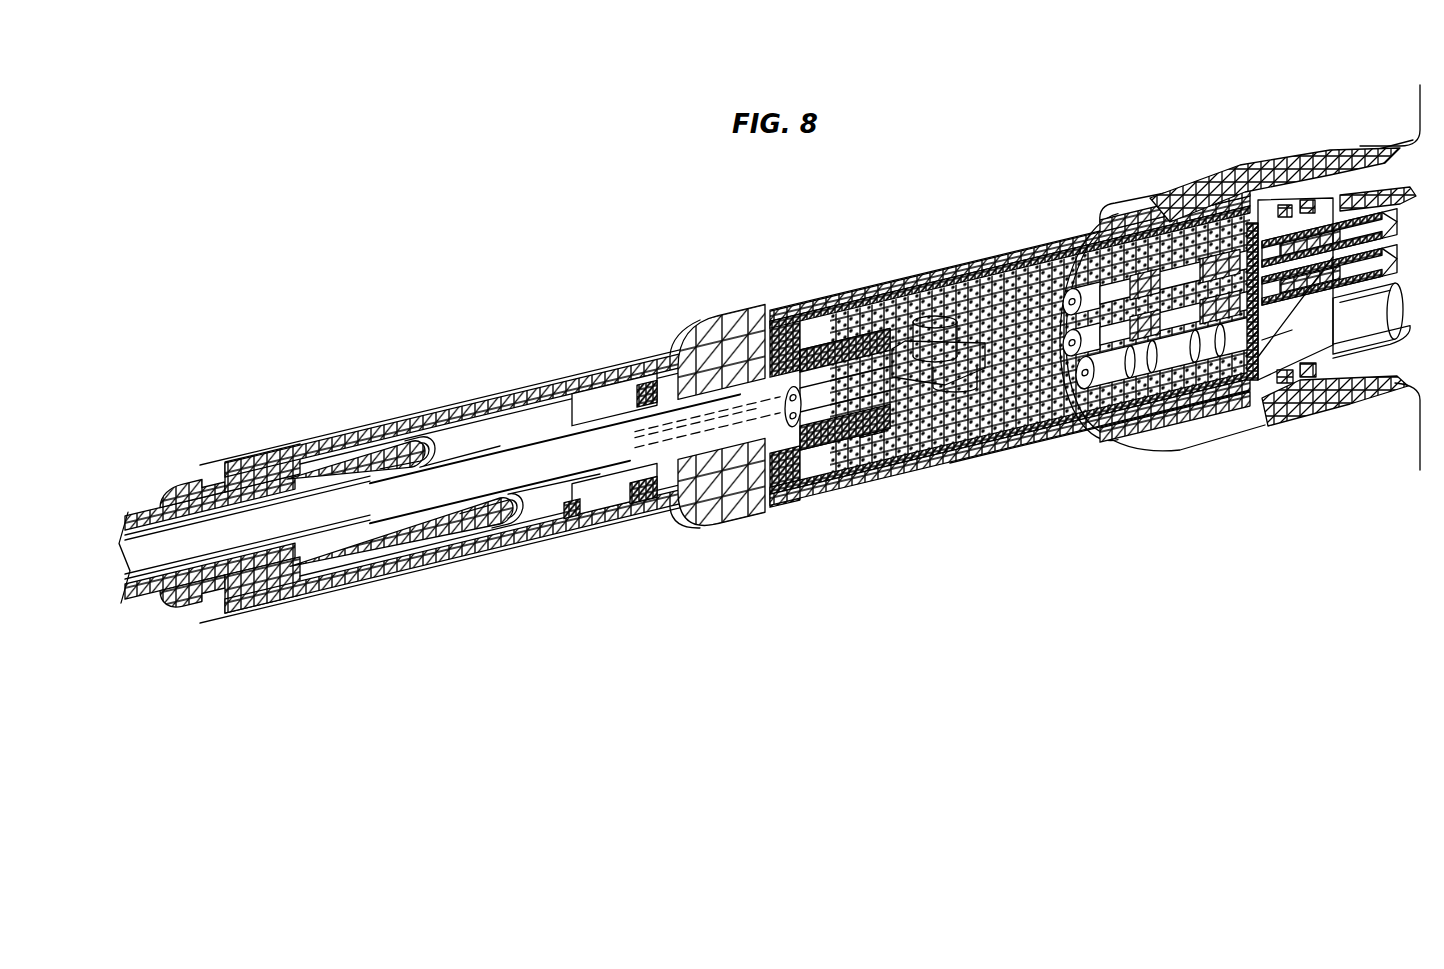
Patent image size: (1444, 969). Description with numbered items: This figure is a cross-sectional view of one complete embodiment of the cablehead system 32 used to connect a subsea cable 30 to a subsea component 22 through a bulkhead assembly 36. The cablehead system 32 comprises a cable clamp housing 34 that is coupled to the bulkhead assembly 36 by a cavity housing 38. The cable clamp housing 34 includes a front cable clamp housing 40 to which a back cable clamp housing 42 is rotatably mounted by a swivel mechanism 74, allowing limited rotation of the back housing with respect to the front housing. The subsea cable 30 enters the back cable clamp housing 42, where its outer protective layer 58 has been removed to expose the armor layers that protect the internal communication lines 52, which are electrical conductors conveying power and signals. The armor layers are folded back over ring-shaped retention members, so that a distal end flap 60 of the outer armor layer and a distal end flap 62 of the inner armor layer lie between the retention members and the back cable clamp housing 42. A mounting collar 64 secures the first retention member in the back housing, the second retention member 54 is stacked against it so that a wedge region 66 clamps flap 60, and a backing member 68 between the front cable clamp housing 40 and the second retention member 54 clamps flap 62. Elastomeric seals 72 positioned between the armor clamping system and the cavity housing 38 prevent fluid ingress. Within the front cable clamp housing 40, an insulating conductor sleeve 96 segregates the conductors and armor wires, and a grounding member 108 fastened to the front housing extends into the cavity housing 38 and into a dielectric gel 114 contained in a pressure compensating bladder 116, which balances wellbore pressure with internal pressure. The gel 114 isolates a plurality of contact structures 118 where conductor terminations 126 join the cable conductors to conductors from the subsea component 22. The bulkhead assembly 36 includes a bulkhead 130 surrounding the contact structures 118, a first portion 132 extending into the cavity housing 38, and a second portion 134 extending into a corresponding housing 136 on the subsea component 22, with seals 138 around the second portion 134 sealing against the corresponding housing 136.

The subsea component 22 is at (1390, 257).
The subsea cable 30 is at (150, 497).
The cablehead system 32 is at (744, 258).
The cable clamp housing 34 is at (598, 362).
The bulkhead assembly 36 is at (1258, 415).
The cavity housing 38 is at (888, 268).
The front cable clamp housing 40 is at (737, 478).
The back cable clamp housing 42 is at (530, 428).
The internal communication lines 52 is at (371, 567).
The second retention member 54 is at (490, 515).
The outer protective layer 58 is at (168, 592).
The distal end flap 60 is at (385, 445).
The distal end flap 62 is at (455, 440).
The mounting collar 64 is at (250, 586).
The wedge region 66 is at (440, 528).
The backing member 68 is at (572, 512).
The elastomeric seals 72 is at (583, 515).
The swivel mechanism 74 is at (668, 370).
The conductor sleeve 96 is at (822, 442).
The grounding member 108 is at (972, 318).
The gel 114 is at (967, 425).
The pressure compensating bladder 116 is at (1043, 438).
The contact structures 118 is at (1197, 392).
The conductor terminations 126 is at (1178, 258).
The bulkhead 130 is at (1366, 385).
The first portion 132 is at (1217, 214).
The second portion 134 is at (1366, 190).
The corresponding housing 136 is at (1290, 167).
The seals 138 is at (1300, 378).